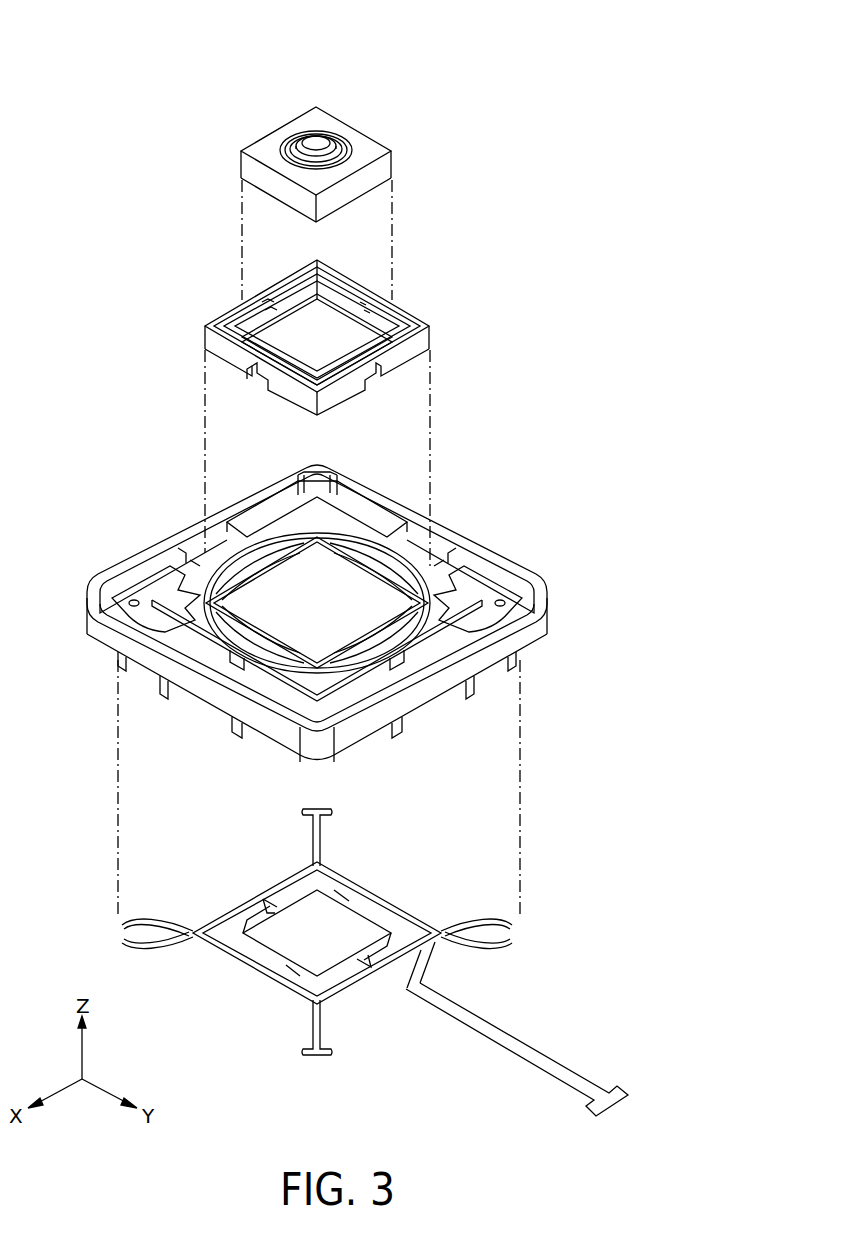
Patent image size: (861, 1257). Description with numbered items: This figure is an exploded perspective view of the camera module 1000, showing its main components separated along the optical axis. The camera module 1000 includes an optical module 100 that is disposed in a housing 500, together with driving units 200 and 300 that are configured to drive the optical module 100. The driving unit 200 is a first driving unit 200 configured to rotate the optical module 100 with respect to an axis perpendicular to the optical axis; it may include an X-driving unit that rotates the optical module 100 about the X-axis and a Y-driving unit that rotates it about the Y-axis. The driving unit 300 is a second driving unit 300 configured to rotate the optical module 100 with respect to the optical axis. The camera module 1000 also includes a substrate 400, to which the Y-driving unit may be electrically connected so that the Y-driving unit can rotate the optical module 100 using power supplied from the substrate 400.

The camera module 1000 is at (143, 46).
The optical module 100 is at (367, 115).
The first driving unit 200 is at (409, 300).
The second driving unit 300 is at (481, 538).
The substrate 400 is at (541, 898).
The housing 500 is at (548, 620).